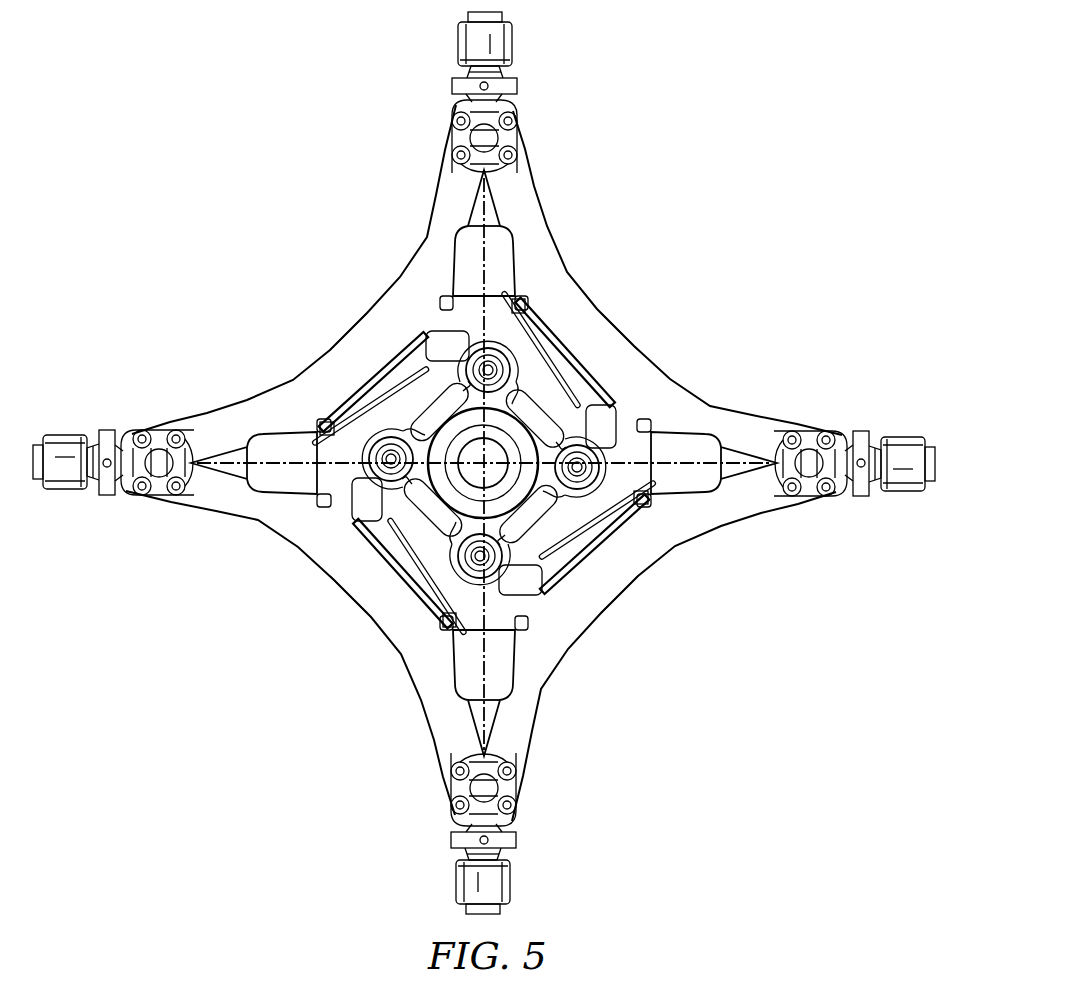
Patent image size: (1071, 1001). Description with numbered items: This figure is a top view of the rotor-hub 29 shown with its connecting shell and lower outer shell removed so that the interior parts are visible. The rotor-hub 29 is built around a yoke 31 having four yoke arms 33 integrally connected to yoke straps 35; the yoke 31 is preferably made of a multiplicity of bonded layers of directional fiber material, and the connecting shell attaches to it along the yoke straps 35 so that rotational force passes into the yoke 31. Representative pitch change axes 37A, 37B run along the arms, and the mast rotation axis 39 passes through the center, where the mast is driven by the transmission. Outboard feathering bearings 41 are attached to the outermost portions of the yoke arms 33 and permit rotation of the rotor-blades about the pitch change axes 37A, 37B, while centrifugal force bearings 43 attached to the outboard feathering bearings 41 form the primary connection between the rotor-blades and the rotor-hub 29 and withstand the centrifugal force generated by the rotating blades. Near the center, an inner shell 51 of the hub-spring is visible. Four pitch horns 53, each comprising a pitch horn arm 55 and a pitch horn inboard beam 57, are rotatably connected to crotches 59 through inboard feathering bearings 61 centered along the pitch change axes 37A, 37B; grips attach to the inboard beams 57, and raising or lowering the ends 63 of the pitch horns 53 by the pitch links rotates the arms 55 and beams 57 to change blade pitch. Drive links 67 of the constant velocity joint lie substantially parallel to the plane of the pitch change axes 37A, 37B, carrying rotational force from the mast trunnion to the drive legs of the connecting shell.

The rotor-hub 29 is at (484, 463).
The yoke 31 is at (481, 465).
The yoke arms 33 is at (520, 190).
The yoke straps 35 is at (358, 325).
The pitch change axis 37A is at (733, 458).
The pitch change axis 37B is at (473, 208).
The mast rotation axis 39 is at (410, 578).
The outboard feathering bearings 41 is at (455, 86).
The centrifugal force (CF) bearings 43 is at (458, 43).
The inner shell 51 is at (462, 335).
The pitch horns 53 is at (588, 305).
The pitch horn arms 55 is at (425, 336).
The pitch horn inboard beams 57 is at (500, 213).
The crotches 59 is at (445, 296).
The inboard feathering bearings 61 is at (500, 312).
The ends of pitch horns 63 is at (437, 293).
The drive links 67 is at (353, 400).